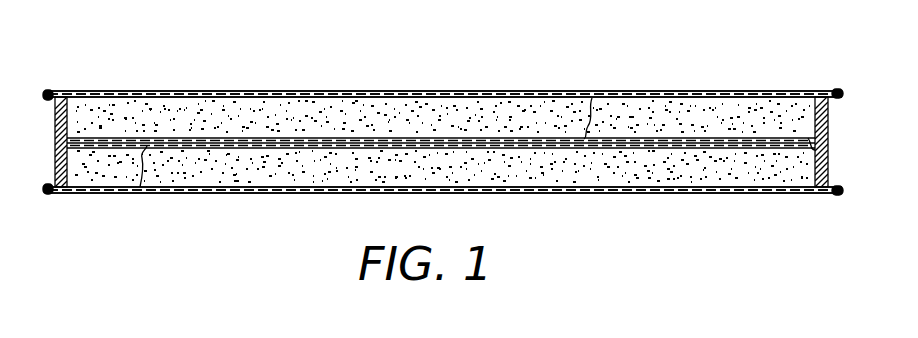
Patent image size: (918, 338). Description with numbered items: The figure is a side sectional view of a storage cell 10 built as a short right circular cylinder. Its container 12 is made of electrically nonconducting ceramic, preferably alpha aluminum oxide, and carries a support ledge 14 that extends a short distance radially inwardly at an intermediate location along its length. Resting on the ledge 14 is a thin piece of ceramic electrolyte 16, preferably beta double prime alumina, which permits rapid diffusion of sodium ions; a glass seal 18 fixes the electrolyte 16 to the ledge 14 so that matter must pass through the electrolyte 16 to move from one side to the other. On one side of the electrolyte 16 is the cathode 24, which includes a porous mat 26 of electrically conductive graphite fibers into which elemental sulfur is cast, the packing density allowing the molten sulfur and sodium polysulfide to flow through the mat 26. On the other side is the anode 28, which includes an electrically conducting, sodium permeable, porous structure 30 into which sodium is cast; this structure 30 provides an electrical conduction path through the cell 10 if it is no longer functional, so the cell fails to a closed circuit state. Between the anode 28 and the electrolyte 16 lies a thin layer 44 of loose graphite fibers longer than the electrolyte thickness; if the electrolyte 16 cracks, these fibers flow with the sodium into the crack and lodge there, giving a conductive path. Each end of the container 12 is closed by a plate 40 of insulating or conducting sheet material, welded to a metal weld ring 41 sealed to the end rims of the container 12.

The storage cell 10 is at (97, 73).
The container 12 is at (57, 122).
The support ledge 14 is at (60, 165).
The ceramic electrolyte 16 is at (140, 188).
The glass seal 18 is at (828, 140).
The cathode 24 is at (198, 171).
The porous mat 26 is at (361, 180).
The anode 28 is at (242, 108).
The porous structure 30 is at (333, 105).
The plate 40 is at (500, 92).
The metal weld ring 41 is at (48, 100).
The thin layer of graphite fibers 44 is at (592, 98).